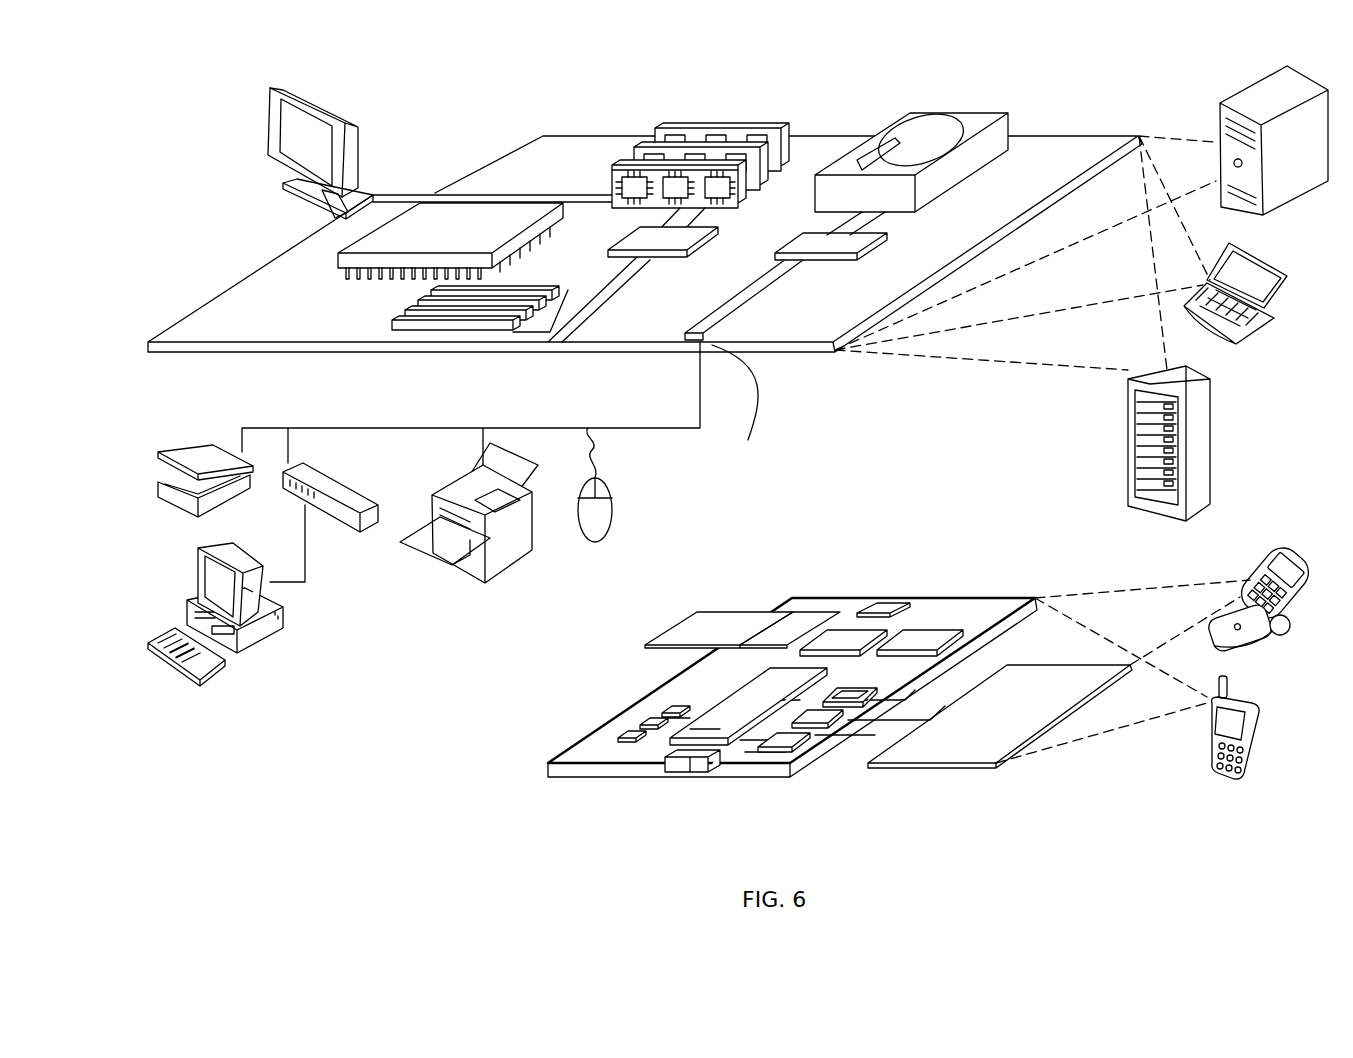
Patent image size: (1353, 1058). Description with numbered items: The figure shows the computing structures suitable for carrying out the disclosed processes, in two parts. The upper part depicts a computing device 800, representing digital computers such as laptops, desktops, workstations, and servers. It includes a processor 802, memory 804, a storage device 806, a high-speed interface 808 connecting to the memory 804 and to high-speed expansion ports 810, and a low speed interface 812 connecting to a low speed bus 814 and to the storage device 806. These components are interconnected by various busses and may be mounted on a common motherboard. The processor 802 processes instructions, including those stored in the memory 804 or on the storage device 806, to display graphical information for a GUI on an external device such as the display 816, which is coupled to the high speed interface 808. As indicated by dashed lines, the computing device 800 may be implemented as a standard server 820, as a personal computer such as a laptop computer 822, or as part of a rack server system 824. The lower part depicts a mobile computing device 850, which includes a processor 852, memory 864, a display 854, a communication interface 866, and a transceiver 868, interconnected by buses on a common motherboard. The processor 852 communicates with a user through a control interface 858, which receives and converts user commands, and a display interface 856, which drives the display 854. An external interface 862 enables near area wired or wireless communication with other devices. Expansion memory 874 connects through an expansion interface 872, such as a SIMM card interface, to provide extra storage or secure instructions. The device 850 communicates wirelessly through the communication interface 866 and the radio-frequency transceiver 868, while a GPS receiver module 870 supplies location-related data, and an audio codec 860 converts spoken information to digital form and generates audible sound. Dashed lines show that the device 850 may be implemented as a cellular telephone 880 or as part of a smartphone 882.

The computing device 800 is at (470, 98).
The processor 802 is at (338, 252).
The memory 804 is at (675, 127).
The storage device 806 is at (905, 125).
The high-speed interface 808 is at (643, 245).
The high-speed expansion ports 810 is at (410, 313).
The low speed interface 812 is at (812, 236).
The low speed bus 814 is at (755, 404).
The display 816 is at (270, 86).
The standard server 820 is at (1218, 118).
The laptop computer 822 is at (1288, 270).
The rack server system 824 is at (1128, 462).
The computing device 850 is at (515, 788).
The processor 852 is at (730, 745).
The display 854 is at (965, 752).
The display interface 856 is at (797, 752).
The control interface 858 is at (818, 728).
The audio codec 860 is at (850, 707).
The external interface 862 is at (688, 772).
The memory 864 is at (625, 724).
The communication interface 866 is at (835, 640).
The transceiver 868 is at (920, 638).
The GPS receiver module 870 is at (890, 602).
The expansion interface 872 is at (762, 612).
The expansion memory 874 is at (697, 612).
The cellular telephone 880 is at (1270, 556).
The smartphone 882 is at (1206, 742).